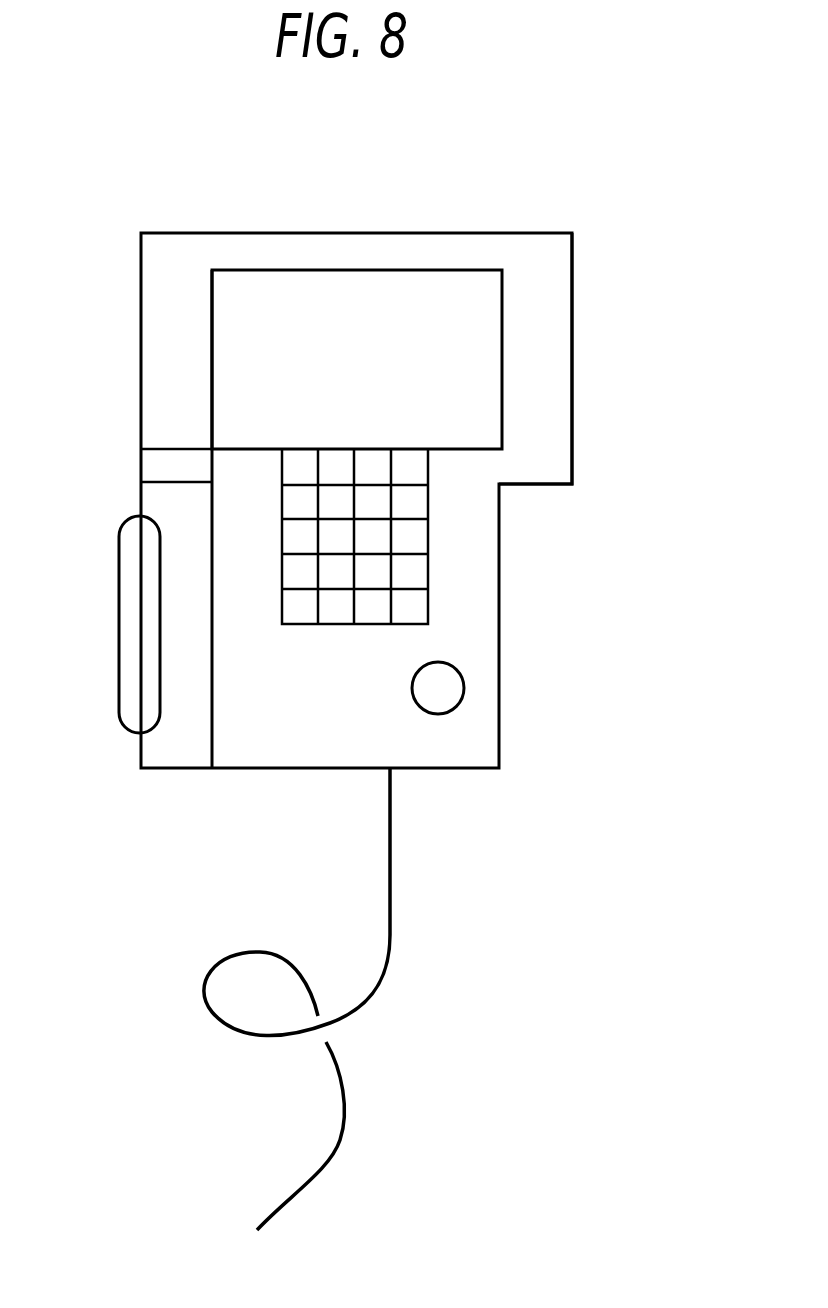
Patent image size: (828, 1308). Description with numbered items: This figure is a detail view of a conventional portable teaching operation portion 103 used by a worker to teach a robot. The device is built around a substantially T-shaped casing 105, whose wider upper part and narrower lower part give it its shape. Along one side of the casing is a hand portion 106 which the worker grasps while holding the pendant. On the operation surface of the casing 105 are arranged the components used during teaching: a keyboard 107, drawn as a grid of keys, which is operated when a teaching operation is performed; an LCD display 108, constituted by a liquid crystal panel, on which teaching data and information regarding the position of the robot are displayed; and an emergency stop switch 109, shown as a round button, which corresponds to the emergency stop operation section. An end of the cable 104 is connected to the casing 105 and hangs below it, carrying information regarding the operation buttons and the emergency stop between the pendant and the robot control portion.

The portable teaching operation portion 103 is at (160, 210).
The cable 104 is at (391, 885).
The casing 105 is at (562, 378).
The hand portion 106 is at (137, 623).
The keyboard 107 is at (413, 539).
The LCD display 108 is at (362, 302).
The emergency stop switch 109 is at (450, 687).